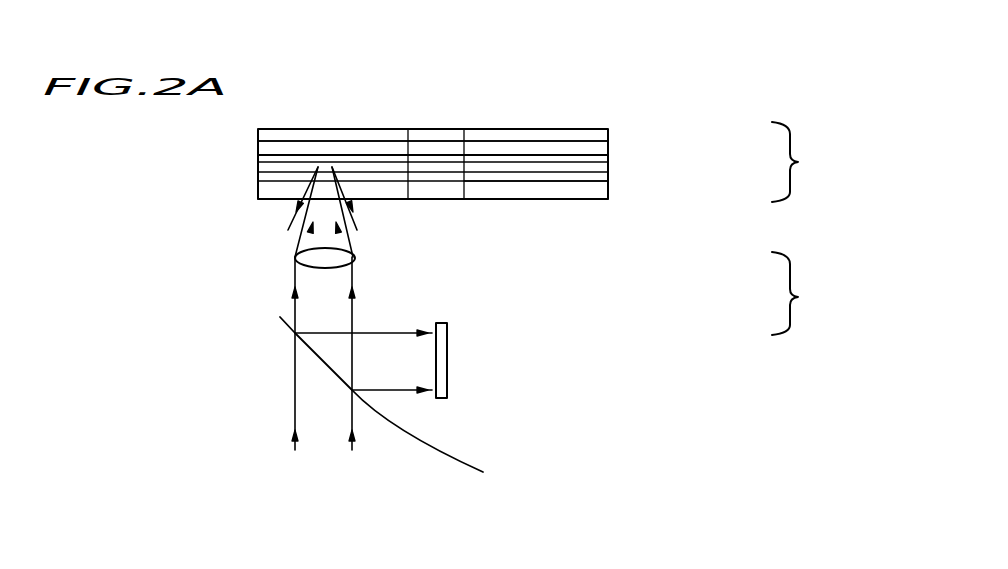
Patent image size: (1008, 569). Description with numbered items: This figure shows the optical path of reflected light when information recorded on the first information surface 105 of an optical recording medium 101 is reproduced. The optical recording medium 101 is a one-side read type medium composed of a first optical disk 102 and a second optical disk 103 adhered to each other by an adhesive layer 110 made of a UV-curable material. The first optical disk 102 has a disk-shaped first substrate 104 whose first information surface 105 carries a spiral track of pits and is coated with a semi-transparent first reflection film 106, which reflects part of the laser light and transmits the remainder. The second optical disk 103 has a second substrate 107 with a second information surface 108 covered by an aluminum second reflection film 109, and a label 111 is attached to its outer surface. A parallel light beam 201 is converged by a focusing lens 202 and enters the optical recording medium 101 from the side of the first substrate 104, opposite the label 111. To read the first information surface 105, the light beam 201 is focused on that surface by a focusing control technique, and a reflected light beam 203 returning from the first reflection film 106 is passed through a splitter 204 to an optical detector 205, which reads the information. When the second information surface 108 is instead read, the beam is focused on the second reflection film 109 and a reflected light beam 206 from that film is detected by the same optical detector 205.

The optical recording medium 101 is at (622, 84).
The first optical disk 102 is at (823, 293).
The second optical disk 103 is at (823, 162).
The first substrate 104 is at (603, 190).
The first information surface 105 is at (543, 183).
The first reflection film 106 is at (608, 172).
The second substrate 107 is at (608, 149).
The second information surface 108 is at (357, 156).
The second reflection film 109 is at (608, 158).
The adhesive layer 110 is at (608, 163).
The label 111 is at (608, 130).
The parallel light beam 201 is at (318, 435).
The focusing lens 202 is at (357, 258).
The reflected light beam 203 is at (302, 233).
The splitter 204 is at (419, 403).
The optical detector 205 is at (447, 360).
The reflected light beam 206 is at (357, 230).